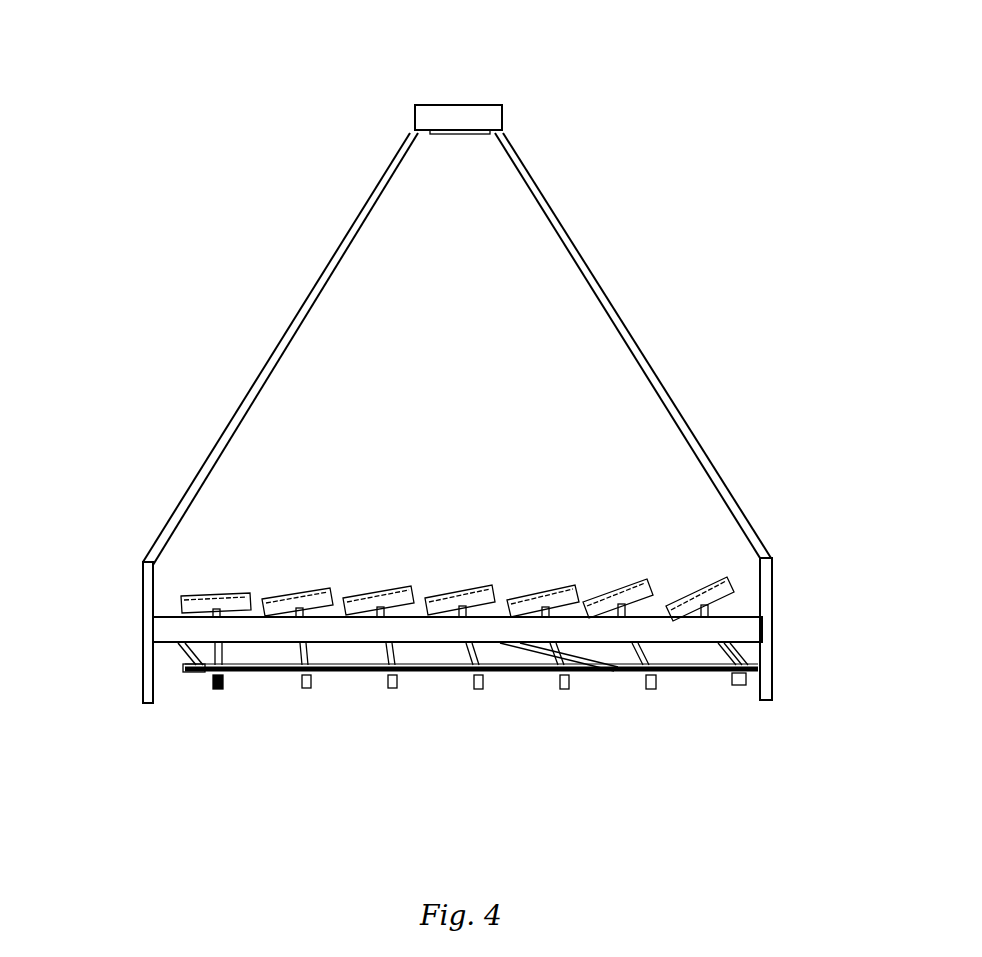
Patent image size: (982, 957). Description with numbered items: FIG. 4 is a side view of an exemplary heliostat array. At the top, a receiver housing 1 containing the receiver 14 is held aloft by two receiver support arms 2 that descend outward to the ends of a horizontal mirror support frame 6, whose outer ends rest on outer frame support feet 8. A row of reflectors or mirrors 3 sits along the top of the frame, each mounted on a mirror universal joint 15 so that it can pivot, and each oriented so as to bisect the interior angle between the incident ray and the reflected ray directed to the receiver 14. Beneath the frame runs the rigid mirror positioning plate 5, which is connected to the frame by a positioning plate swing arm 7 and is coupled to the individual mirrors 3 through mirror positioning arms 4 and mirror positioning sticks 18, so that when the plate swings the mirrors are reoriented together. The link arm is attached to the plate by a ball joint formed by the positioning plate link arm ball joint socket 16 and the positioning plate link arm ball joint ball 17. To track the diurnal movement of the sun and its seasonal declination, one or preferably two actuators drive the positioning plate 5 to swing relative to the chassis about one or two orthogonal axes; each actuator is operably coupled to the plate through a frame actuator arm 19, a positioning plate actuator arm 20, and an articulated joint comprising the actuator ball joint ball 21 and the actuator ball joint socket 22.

The receiver housing 1 is at (460, 104).
The receiver support arms 2 is at (626, 312).
The reflectors or mirrors 3 is at (390, 595).
The mirror positioning arms 4 is at (305, 692).
The rigid mirror positioning plate 5 is at (430, 677).
The mirror support frame 6 is at (192, 633).
The positioning plate swing arm 7 is at (190, 657).
The outer frame support feet 8 is at (138, 678).
The receiver 14 is at (461, 143).
The mirror universal joint 15 is at (693, 590).
The positioning plate link arm ball joint socket 16 is at (183, 675).
The positioning plate link arm ball joint ball 17 is at (200, 680).
The mirror positioning sticks 18 is at (480, 692).
The frame actuator arm 19 is at (538, 676).
The positioning plate actuator arm 20 is at (583, 673).
The actuator ball joint ball 21 is at (615, 676).
The actuator ball joint socket 22 is at (635, 678).